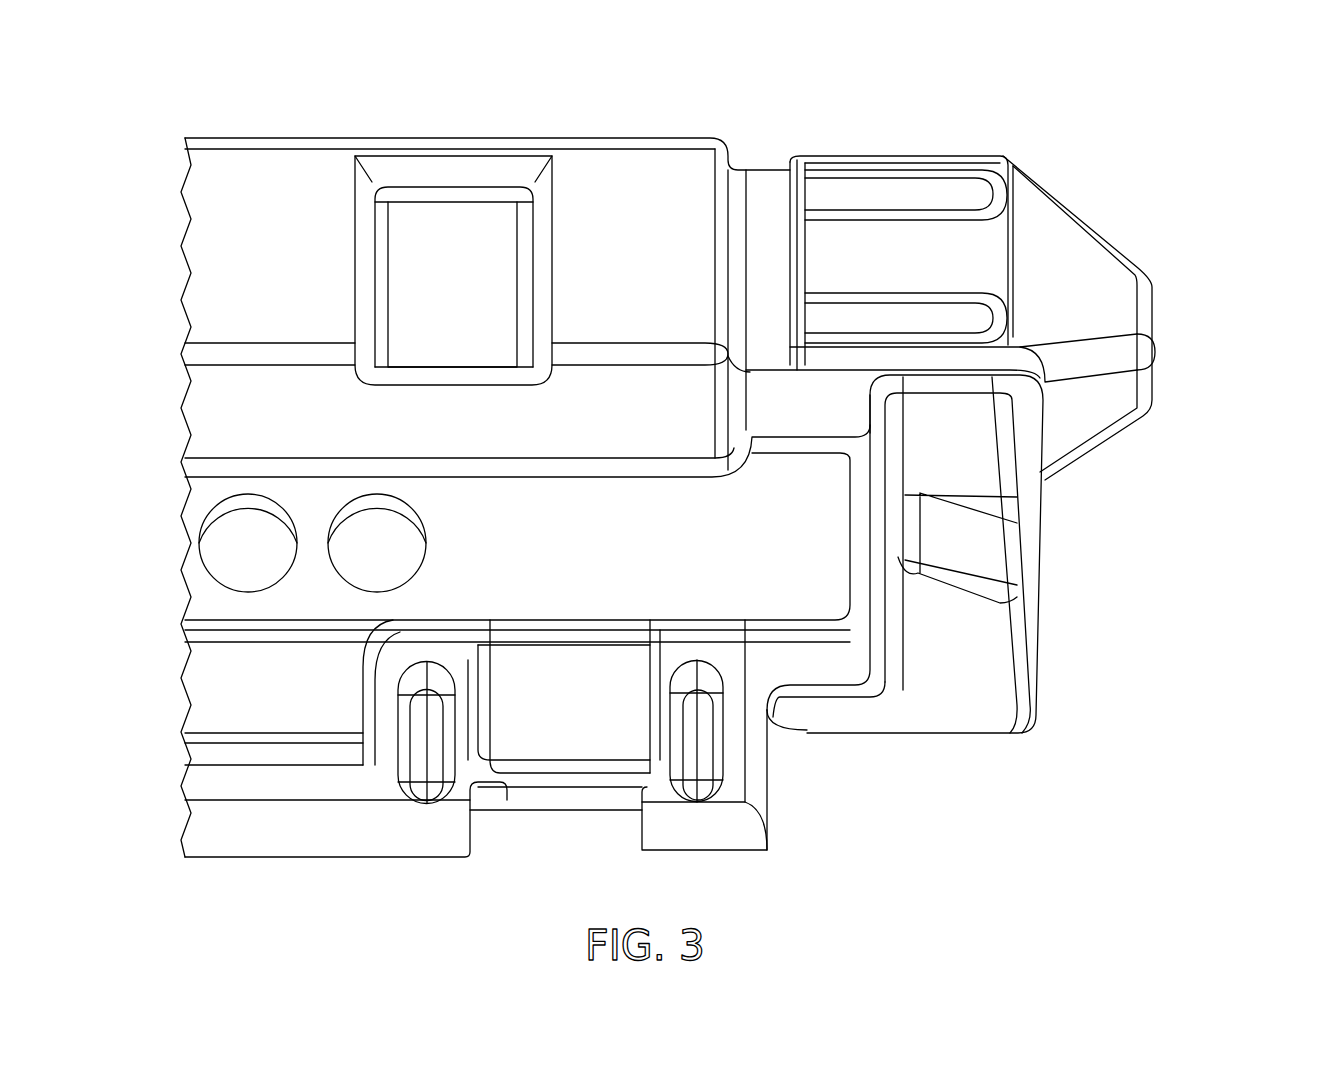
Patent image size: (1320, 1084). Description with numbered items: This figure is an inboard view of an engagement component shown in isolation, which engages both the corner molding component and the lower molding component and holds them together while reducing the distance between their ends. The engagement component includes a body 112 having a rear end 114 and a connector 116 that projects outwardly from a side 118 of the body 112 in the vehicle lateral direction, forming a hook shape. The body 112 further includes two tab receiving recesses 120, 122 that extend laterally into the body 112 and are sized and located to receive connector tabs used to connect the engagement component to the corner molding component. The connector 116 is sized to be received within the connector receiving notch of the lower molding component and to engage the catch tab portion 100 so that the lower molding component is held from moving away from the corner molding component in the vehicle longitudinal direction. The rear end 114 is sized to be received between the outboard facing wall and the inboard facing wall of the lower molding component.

The catch tab portion 100 is at (1034, 128).
The body 112 is at (206, 607).
The rear end 114 is at (1178, 412).
The connector 116 is at (1026, 575).
The side 118 is at (780, 605).
The tab receiving recess 120 is at (451, 226).
The tab receiving recess 122 is at (567, 750).